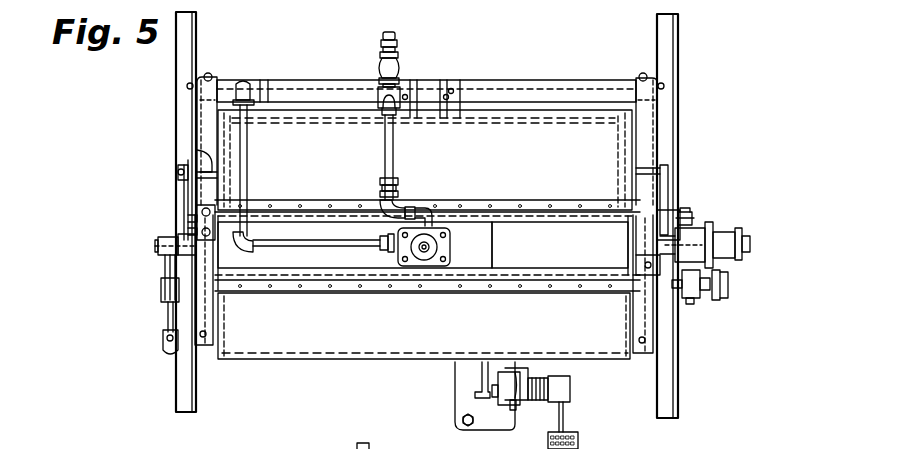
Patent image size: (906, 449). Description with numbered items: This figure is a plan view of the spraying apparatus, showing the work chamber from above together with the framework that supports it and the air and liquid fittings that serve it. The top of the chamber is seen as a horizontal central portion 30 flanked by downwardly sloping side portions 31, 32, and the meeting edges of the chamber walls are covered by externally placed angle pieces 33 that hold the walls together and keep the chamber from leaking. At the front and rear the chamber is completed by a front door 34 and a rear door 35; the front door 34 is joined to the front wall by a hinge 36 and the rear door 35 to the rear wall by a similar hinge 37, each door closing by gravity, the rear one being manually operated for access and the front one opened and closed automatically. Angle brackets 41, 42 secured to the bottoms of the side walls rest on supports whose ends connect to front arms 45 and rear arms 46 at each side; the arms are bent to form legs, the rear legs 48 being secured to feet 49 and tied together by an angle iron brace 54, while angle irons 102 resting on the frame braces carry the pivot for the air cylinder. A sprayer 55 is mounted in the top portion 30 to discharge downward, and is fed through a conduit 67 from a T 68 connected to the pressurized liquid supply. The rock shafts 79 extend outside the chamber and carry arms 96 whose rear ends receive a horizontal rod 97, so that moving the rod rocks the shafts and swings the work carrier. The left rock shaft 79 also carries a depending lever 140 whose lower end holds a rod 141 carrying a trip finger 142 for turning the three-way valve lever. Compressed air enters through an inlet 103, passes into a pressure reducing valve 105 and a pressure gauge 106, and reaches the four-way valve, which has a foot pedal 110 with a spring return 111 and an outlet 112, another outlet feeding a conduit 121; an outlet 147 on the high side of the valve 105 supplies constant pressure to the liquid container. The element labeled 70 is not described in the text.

The feet 49 is at (185, 52).
The rear legs 48 is at (212, 75).
The rear arms 46 is at (203, 127).
The angle iron brace 54 is at (507, 92).
The angle irons 102 is at (406, 95).
The rear door 35 is at (565, 160).
The hinge 37 is at (525, 207).
The horizontal central portion 30 is at (355, 245).
The side portion 31 is at (560, 245).
The angle pieces 33 is at (588, 222).
The side portion 32 is at (231, 253).
The hinge 36 is at (545, 292).
The front door 34 is at (265, 340).
The front arms 45 is at (205, 322).
The pipe 70 is at (248, 155).
The sprayer 55 is at (423, 252).
The conduit 67 is at (395, 152).
The T 68 is at (380, 97).
The horizontal rod 97 is at (200, 148).
The arms 96 is at (186, 188).
The angle bracket 42 is at (190, 215).
The rock shafts 79 is at (158, 248).
The depending lever 140 is at (165, 285).
The rod 141 is at (168, 320).
The trip finger 142 is at (166, 348).
The angle bracket 41 is at (660, 212).
The inlet 103 is at (640, 270).
The outlet 147 is at (690, 222).
The pressure reducing valve 105 is at (722, 246).
The pressure gauge 106 is at (710, 290).
The conduit 121 is at (480, 380).
The spring return 111 is at (522, 404).
The outlet 112 is at (530, 380).
The foot pedal 110 is at (578, 434).